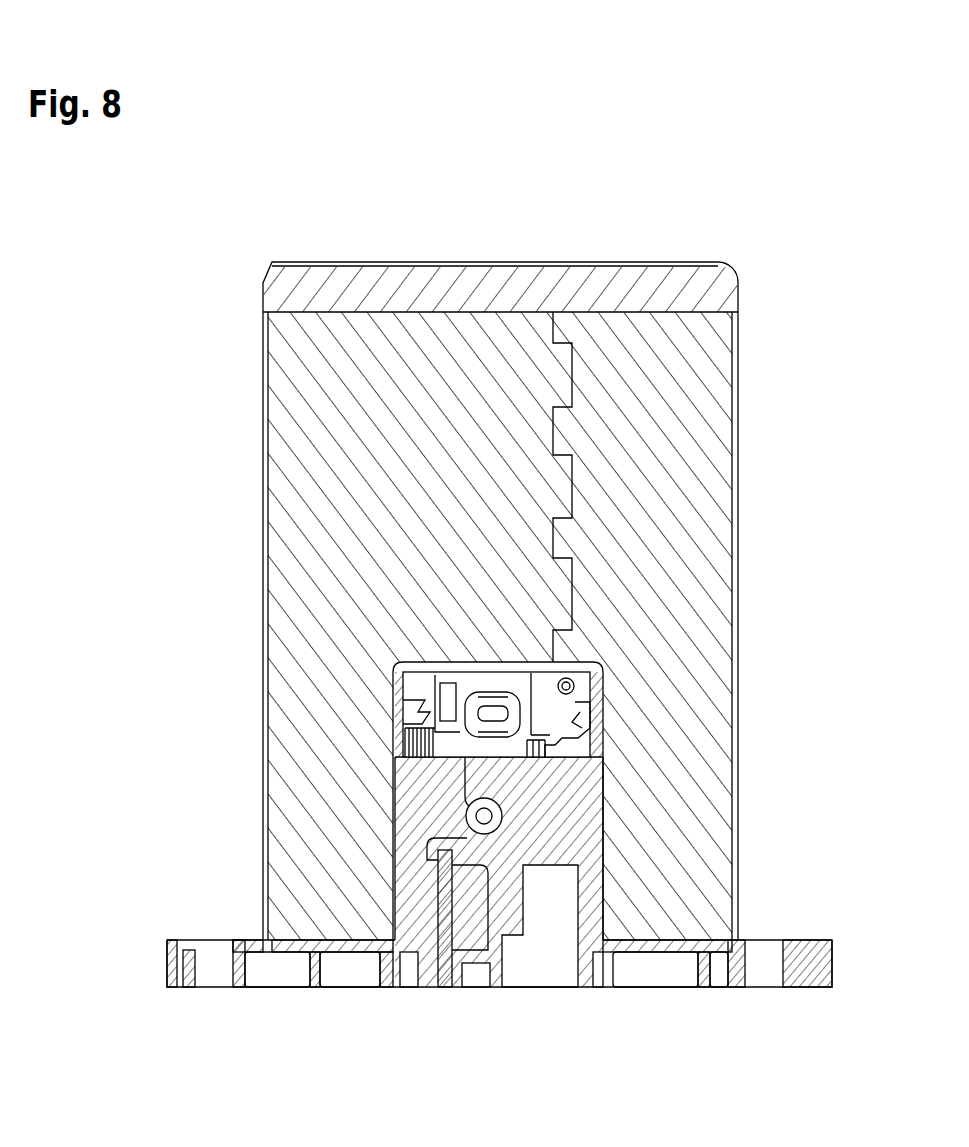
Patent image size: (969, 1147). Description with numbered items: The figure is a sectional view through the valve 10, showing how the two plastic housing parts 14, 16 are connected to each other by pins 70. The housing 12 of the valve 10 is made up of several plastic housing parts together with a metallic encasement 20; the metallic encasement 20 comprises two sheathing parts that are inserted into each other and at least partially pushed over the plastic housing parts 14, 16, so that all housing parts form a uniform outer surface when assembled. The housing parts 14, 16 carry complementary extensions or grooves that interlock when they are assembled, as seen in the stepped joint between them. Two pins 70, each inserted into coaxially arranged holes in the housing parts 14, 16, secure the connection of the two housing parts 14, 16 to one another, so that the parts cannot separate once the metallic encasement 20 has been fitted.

The valve 10 is at (795, 215).
The housing 12 is at (636, 330).
The plastic housing part 14 is at (410, 920).
The plastic housing part 16 is at (588, 922).
The metallic encasement 20 is at (670, 410).
The pin 70 is at (425, 283).